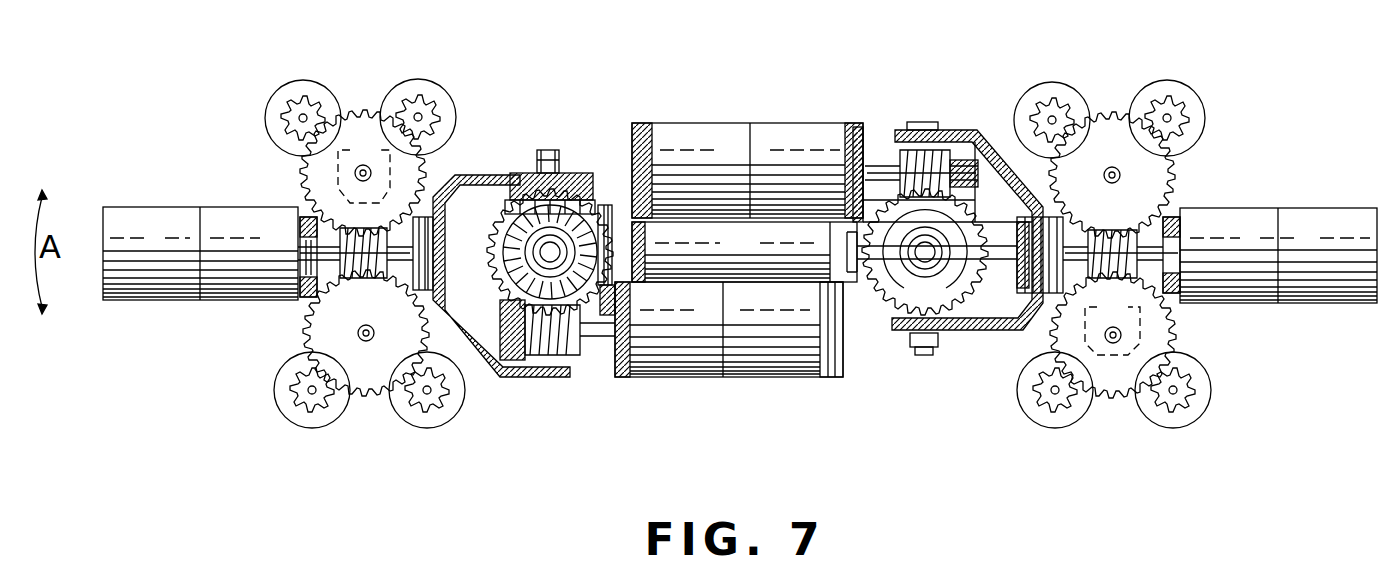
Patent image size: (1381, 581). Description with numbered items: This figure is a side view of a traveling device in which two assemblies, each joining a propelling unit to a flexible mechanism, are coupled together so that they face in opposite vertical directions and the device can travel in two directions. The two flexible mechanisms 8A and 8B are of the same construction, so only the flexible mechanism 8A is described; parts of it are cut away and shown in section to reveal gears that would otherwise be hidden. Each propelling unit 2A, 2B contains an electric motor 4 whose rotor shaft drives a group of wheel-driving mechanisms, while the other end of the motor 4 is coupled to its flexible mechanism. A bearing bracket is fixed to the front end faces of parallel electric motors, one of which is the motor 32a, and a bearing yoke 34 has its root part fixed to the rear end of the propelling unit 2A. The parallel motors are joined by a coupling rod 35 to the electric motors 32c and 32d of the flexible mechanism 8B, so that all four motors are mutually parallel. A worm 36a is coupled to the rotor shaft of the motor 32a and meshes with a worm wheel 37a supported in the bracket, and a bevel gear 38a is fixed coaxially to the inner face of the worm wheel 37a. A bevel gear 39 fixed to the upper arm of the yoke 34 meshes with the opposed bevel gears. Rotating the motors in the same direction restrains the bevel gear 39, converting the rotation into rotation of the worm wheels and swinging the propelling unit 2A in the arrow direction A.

The electric motor 4 is at (176, 214).
The propelling unit 2A is at (366, 100).
The propelling unit 2B is at (1108, 100).
The flexible mechanism 8A is at (580, 118).
The flexible mechanism 8B is at (945, 118).
The bearing yoke 34 is at (492, 176).
The coupling rod 35 is at (788, 262).
The worm 36a is at (540, 363).
The worm wheel 37a is at (590, 205).
The bevel gear 38a is at (530, 185).
The bevel gear 39 is at (505, 218).
The electric motor 32a is at (675, 378).
The electric motor 32c is at (747, 143).
The electric motor 32d is at (712, 128).